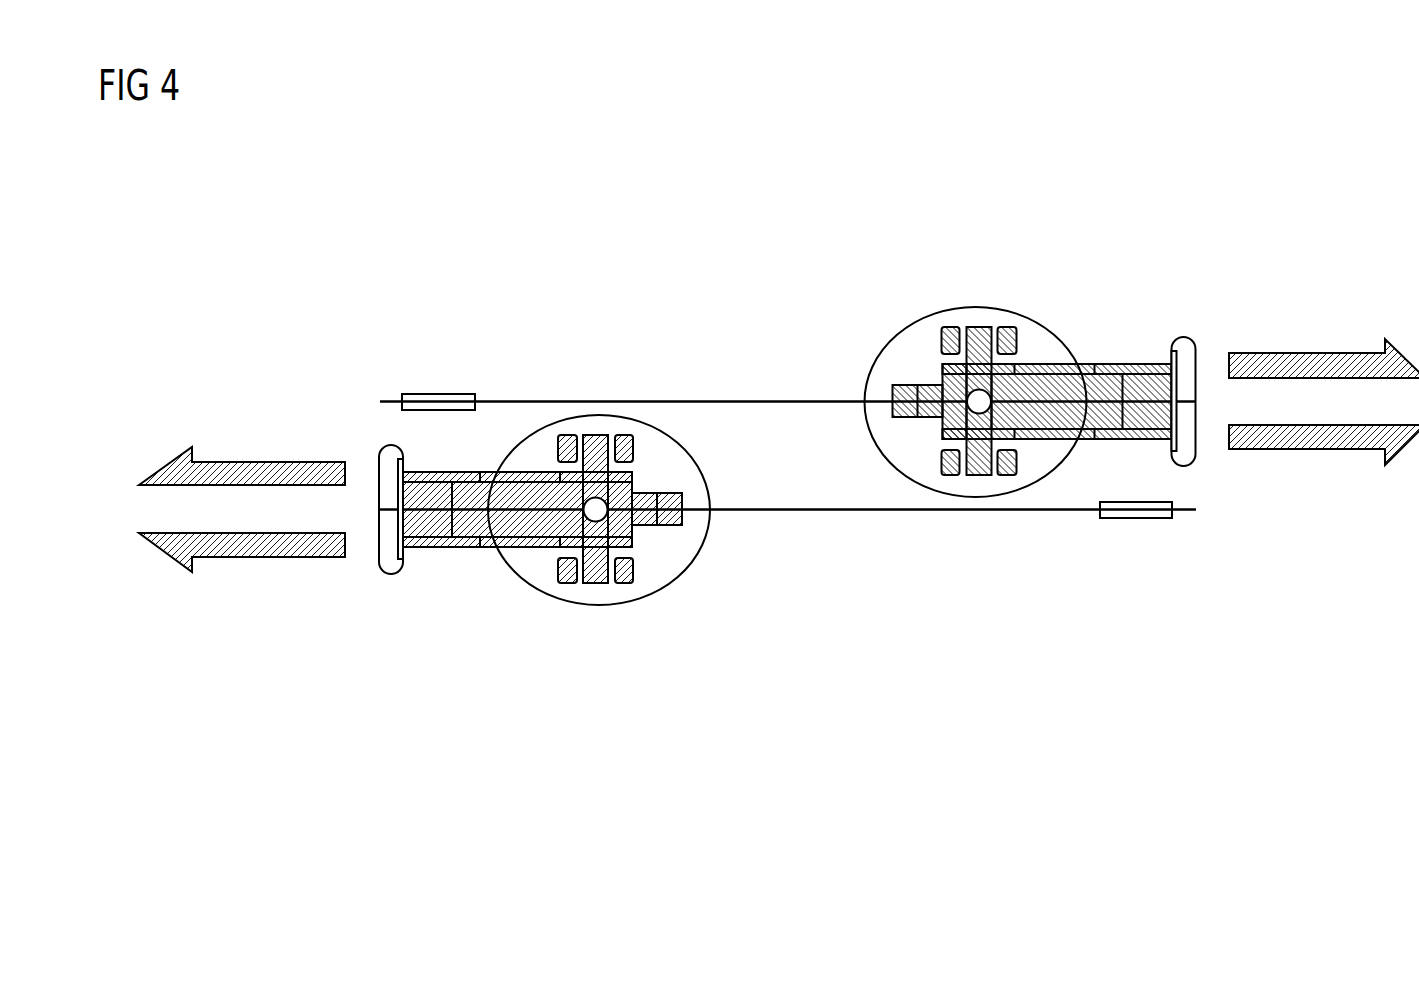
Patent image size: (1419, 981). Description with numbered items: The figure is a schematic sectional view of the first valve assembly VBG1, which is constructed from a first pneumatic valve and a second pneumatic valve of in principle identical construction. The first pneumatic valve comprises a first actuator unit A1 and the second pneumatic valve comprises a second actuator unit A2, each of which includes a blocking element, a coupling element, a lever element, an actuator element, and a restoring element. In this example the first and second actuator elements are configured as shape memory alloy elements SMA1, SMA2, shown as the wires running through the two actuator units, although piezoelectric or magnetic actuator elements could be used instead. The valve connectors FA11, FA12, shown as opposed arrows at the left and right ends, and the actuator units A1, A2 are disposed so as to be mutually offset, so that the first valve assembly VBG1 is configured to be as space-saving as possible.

The first valve assembly VBG1 is at (810, 198).
The first actuator unit A1 is at (498, 617).
The second actuator unit A2 is at (1076, 293).
The first shape memory alloy element SMA1 is at (842, 512).
The second shape memory alloy element SMA2 is at (732, 400).
The valve connector FA11 is at (258, 547).
The valve connector FA12 is at (1318, 360).